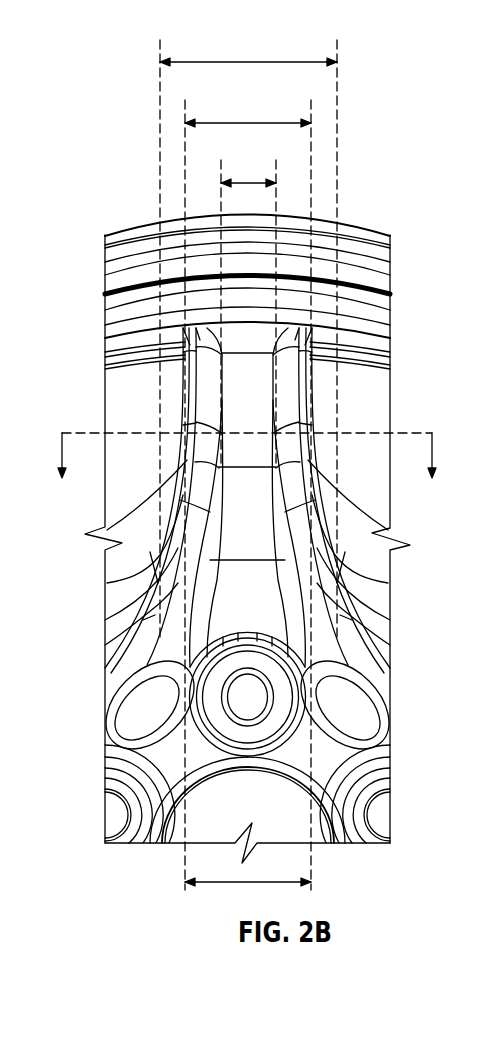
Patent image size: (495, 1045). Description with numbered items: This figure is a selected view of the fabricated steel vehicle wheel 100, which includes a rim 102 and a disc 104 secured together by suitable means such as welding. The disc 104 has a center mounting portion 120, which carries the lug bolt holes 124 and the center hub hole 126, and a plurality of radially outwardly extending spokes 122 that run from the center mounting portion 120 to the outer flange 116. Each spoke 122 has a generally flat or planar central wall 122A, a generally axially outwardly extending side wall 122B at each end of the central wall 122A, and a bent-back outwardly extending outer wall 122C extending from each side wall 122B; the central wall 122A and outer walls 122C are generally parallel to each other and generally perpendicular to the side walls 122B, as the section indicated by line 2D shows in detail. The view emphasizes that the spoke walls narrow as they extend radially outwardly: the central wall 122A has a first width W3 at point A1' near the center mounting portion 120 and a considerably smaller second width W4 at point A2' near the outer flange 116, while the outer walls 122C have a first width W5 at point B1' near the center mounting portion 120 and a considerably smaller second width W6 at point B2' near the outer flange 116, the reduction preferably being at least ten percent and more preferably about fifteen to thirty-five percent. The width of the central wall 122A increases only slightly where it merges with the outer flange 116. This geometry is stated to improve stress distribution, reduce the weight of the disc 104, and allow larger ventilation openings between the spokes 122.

The fabricated steel vehicle wheel 100 is at (397, 175).
The rim 102 is at (381, 231).
The disc 104 is at (372, 623).
The outer flange 116 is at (384, 352).
The center mounting portion 120 is at (372, 722).
The spoke 122 is at (248, 535).
The central wall 122A is at (262, 488).
The side wall 122B is at (322, 422).
The outer wall 122C is at (343, 600).
The lug bolt hole 124 is at (375, 820).
The center hub hole 126 is at (213, 780).
The first width of central wall W3 is at (248, 882).
The second width of central wall W4 is at (248, 183).
The first width of outer walls W5 is at (248, 62).
The second width of outer walls W6 is at (248, 123).
The section line for FIG. 2D is at (249, 475).
The point A1' is at (230, 590).
The point A2' is at (372, 321).
The point B1' is at (73, 625).
The point B2' is at (122, 385).